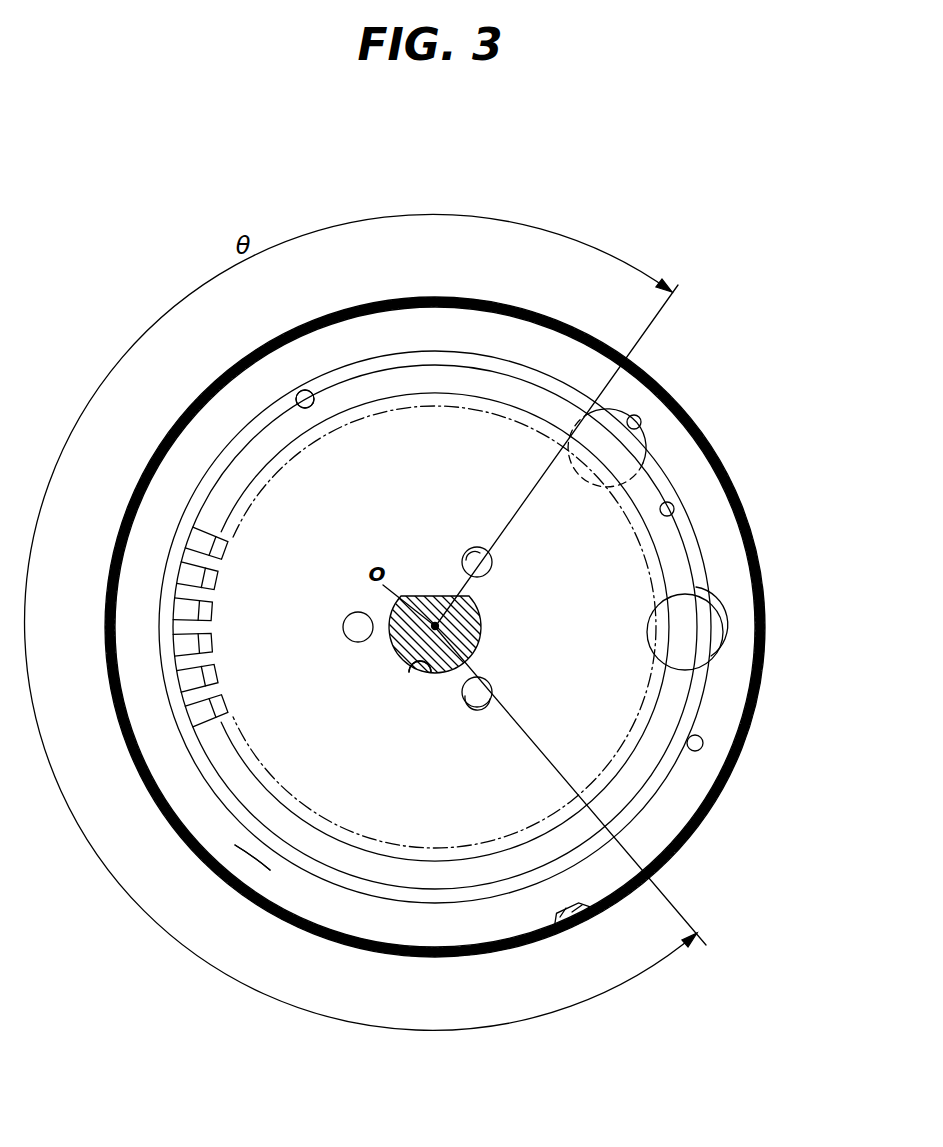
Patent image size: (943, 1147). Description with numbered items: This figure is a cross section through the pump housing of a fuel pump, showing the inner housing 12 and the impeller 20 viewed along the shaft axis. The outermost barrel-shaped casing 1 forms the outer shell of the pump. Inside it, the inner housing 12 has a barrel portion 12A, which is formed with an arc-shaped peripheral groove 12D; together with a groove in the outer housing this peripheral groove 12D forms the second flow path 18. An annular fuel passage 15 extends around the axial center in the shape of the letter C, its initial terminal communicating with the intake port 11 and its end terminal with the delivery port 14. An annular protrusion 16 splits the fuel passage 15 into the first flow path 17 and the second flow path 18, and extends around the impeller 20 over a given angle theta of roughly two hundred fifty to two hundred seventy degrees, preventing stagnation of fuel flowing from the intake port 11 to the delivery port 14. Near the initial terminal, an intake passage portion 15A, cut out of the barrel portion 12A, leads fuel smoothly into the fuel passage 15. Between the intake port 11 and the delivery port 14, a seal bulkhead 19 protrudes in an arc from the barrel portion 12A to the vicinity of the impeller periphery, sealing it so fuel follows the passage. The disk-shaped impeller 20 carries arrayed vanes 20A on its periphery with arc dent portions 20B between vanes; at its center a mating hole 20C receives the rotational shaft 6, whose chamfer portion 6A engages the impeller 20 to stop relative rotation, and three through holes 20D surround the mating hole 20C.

The casing 1 is at (755, 528).
The rotational shaft 6 is at (477, 644).
The chamfer portion 6A is at (420, 595).
The intake port 11 is at (698, 670).
The inner housing 12 is at (660, 832).
The barrel portion 12A is at (742, 630).
The peripheral groove 12D is at (258, 828).
The delivery port 14 is at (640, 416).
The fuel passage 15 is at (215, 778).
The intake passage portion 15A is at (700, 738).
The annular protrusion 16 is at (303, 392).
The first flow path 17 is at (303, 392).
The second flow path 18 is at (258, 828).
The seal bulkhead 19 is at (668, 502).
The impeller 20 is at (541, 808).
The vanes 20A is at (188, 556).
The arc dent portions 20B is at (223, 540).
The mating hole 20C is at (427, 675).
The through hole 20D is at (476, 547).